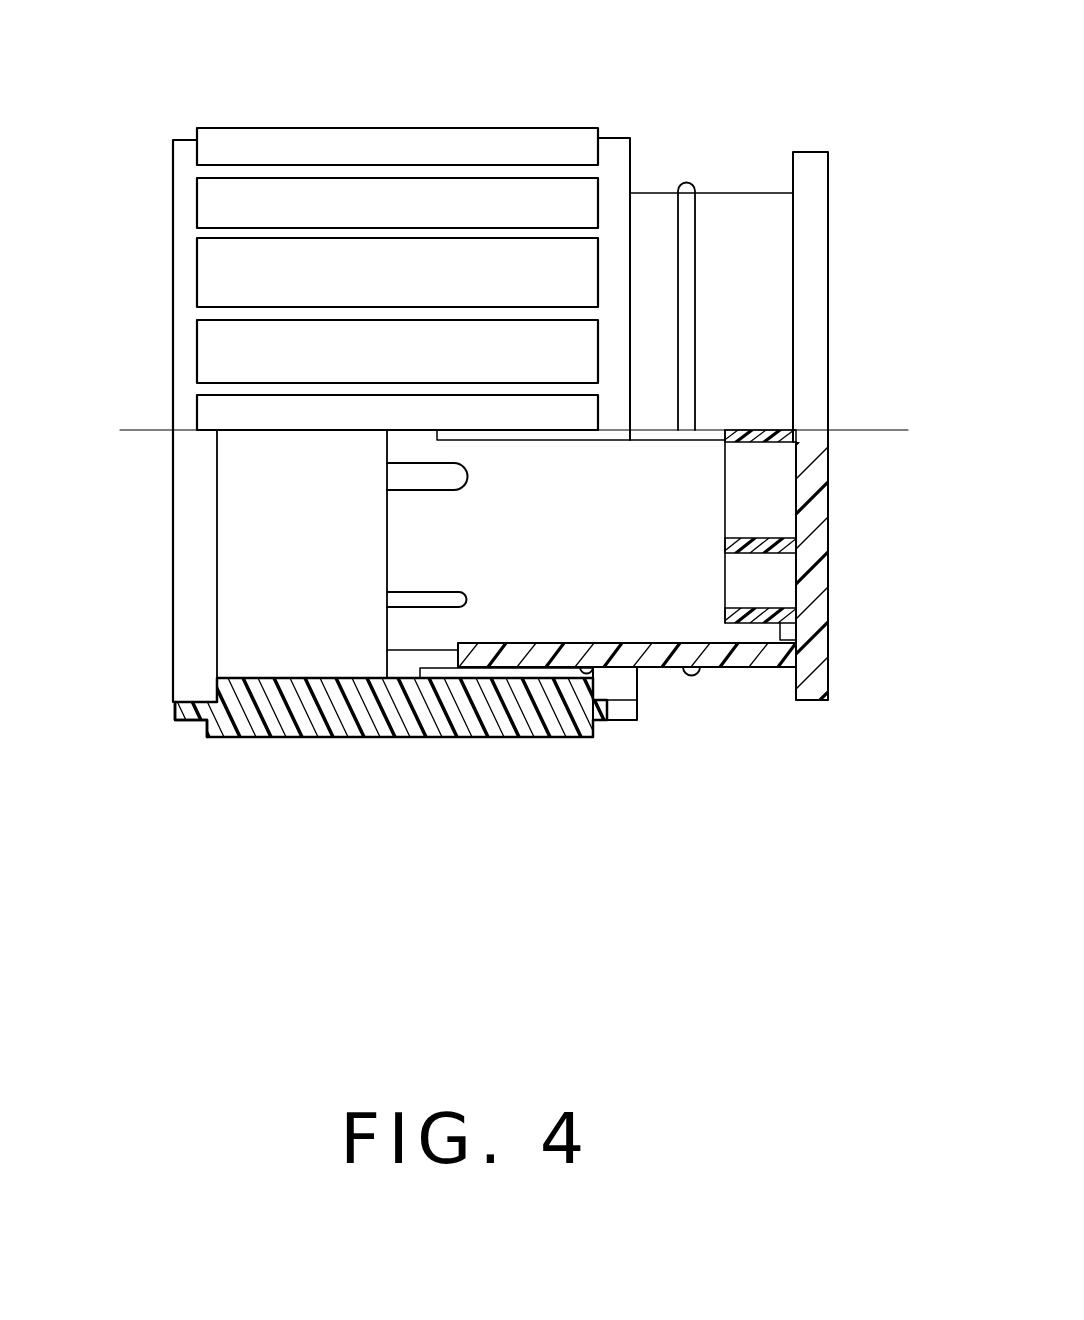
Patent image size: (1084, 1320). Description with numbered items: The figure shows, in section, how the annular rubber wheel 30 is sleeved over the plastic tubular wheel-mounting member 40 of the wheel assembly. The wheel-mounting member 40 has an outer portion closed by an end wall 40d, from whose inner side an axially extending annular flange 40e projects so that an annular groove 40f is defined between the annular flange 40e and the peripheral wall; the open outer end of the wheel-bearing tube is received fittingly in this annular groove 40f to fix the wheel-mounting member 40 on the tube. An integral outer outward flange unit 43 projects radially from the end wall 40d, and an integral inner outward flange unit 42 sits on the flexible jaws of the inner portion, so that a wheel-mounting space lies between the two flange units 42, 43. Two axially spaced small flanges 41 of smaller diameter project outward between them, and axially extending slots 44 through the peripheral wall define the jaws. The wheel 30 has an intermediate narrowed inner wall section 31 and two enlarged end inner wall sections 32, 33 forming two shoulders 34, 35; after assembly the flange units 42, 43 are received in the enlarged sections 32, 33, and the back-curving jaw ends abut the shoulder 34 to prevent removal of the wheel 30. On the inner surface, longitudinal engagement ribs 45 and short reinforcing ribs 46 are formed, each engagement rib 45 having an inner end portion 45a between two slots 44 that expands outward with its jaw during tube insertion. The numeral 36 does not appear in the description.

The annular rubber wheel 30 is at (299, 112).
The intermediate narrowed inner wall section 31 is at (243, 553).
The enlarged end inner wall section 32 is at (193, 673).
The enlarged end inner wall section 33 is at (620, 680).
The shoulder 34 is at (228, 683).
The shoulder 35 is at (607, 722).
The terminal receiving chambers 36 is at (547, 195).
The wheel-mounting member 40 is at (850, 605).
The closing end wall 40d is at (813, 632).
The axially extending annular flange 40e is at (780, 622).
The annular groove 40f is at (740, 680).
The small flanges 41 is at (683, 181).
The inner outward flange unit 42 is at (388, 663).
The outer outward flange unit 43 is at (820, 702).
The axially extending slots 44 is at (400, 473).
The longitudinal engagement ribs 45 is at (455, 647).
The inner end portion 45a is at (460, 430).
The short reinforcing ribs 46 is at (742, 540).